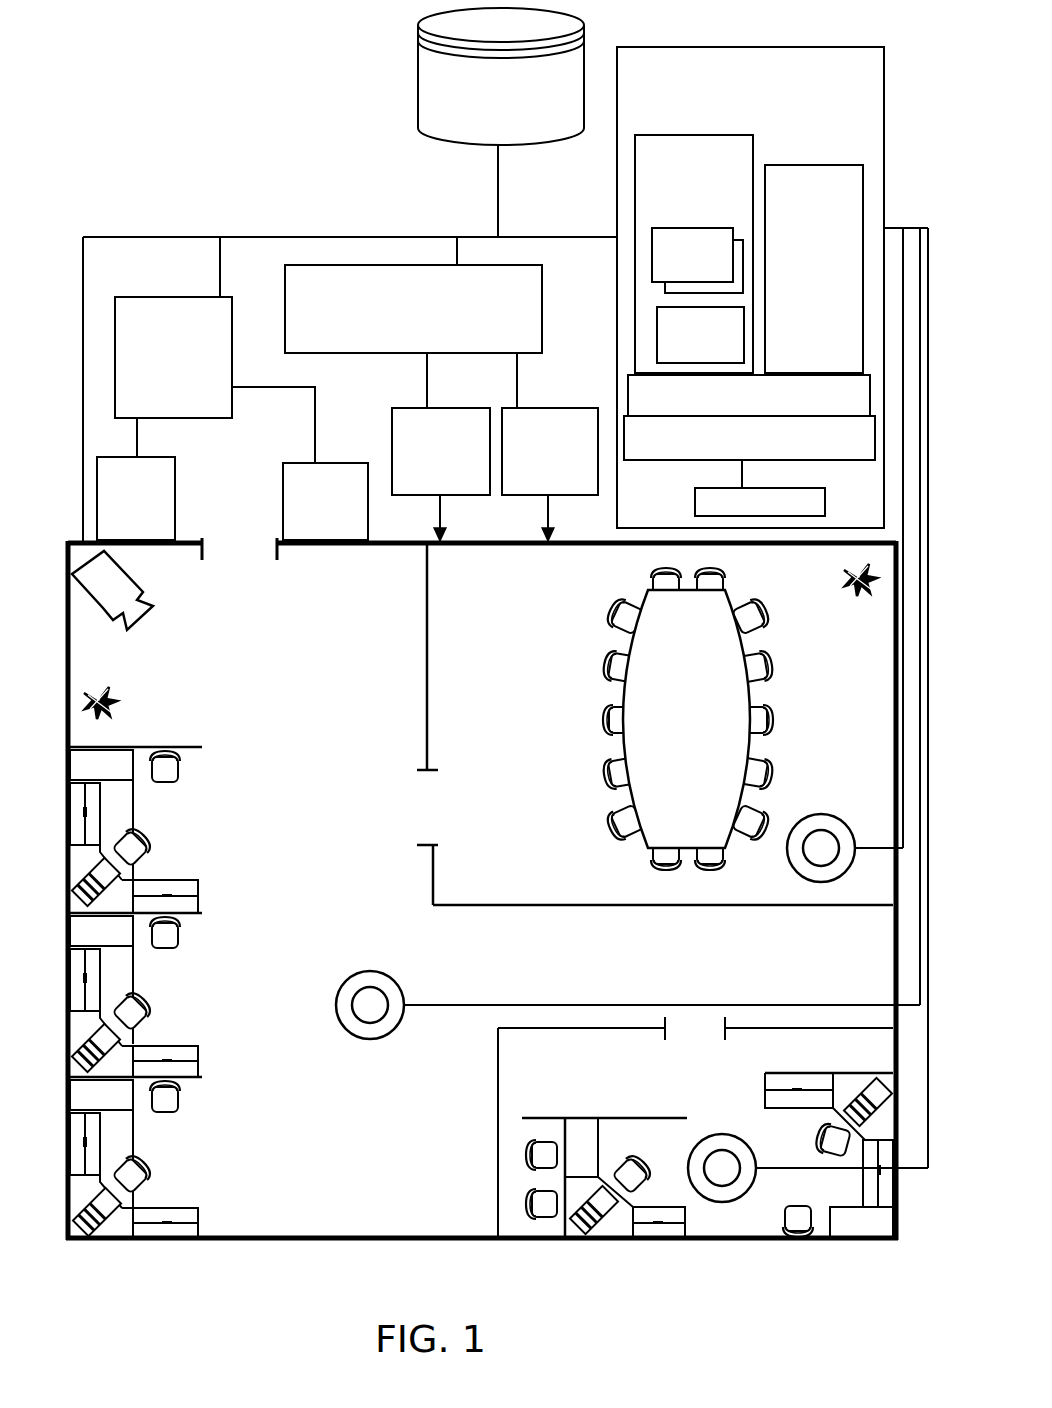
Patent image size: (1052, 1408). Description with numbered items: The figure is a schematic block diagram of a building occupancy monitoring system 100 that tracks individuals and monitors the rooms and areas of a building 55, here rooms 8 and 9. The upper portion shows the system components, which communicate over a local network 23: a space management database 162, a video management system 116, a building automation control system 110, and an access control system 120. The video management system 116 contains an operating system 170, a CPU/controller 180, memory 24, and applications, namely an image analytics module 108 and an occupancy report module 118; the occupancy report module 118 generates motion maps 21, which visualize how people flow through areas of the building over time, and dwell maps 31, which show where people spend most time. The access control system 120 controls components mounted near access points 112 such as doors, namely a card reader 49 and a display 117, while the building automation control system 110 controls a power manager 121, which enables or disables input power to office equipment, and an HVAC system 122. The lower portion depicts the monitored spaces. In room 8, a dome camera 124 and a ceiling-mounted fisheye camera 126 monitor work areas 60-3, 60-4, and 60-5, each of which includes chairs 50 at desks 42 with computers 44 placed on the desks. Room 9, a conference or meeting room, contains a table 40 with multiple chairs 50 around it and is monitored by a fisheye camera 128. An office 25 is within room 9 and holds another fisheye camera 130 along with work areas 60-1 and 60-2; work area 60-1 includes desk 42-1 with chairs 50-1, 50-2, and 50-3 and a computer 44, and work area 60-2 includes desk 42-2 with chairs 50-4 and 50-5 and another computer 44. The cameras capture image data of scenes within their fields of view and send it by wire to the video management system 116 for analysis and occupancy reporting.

The building occupancy monitoring system 100 is at (134, 30).
The space management database 162 is at (501, 122).
The motion map 21 is at (514, 218).
The dwell map 31 is at (700, 335).
The video management system 116 is at (772, 607).
The occupancy report module 118 is at (694, 254).
The image analytics module 108 is at (814, 269).
The operating system 170 is at (749, 395).
The CPU/controller 180 is at (749, 452).
The memory 24 is at (760, 502).
The local network 23 is at (287, 237).
The building automation control system 110 is at (413, 336).
The access control system 120 is at (215, 380).
The card reader 49 is at (136, 498).
The display 117 is at (325, 501).
The power manager 121 is at (441, 474).
The heating/ventilation/air conditioning system 122 is at (550, 474).
The building 55 is at (272, 1240).
The room 8 is at (342, 690).
The room 9 is at (526, 711).
The access point 112 is at (247, 578).
The surveillance camera 124 is at (103, 608).
The desk 42 is at (107, 757).
The computer 44 is at (91, 1232).
The chair 50 is at (183, 768).
The table 40 is at (686, 719).
The work area 60-5 is at (207, 834).
The work area 60-4 is at (215, 1004).
The work area 60-3 is at (190, 1130).
The work area 60-1 is at (632, 1092).
The work area 60-2 is at (746, 1066).
The office 25 is at (686, 1018).
The surveillance camera 128 is at (836, 812).
The surveillance camera 126 is at (349, 1038).
The surveillance camera 130 is at (710, 1134).
The desk 42-1 is at (580, 1130).
The chair 50-1 is at (527, 1157).
The chair 50-2 is at (527, 1205).
The chair 50-3 is at (622, 1155).
The desk 42-2 is at (868, 1230).
The chair 50-4 is at (813, 1142).
The chair 50-5 is at (793, 1240).